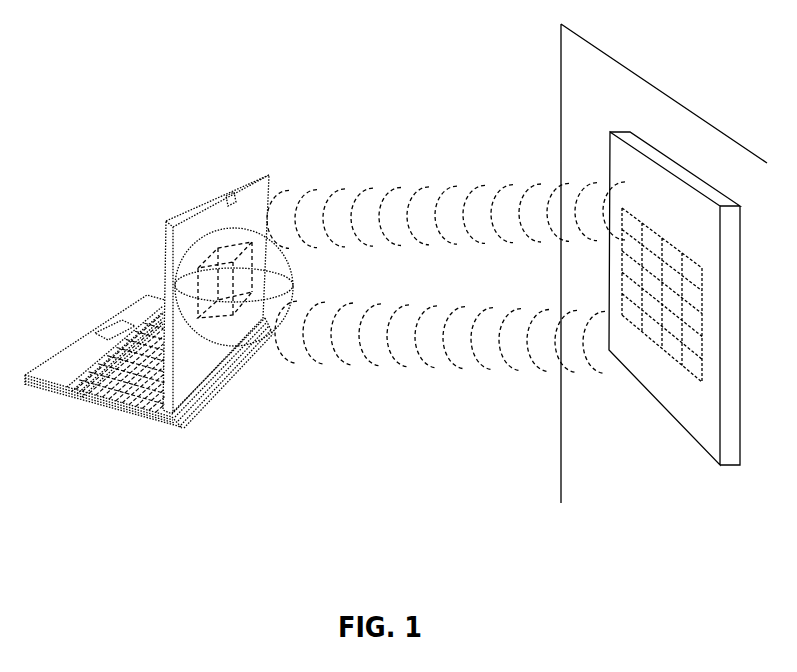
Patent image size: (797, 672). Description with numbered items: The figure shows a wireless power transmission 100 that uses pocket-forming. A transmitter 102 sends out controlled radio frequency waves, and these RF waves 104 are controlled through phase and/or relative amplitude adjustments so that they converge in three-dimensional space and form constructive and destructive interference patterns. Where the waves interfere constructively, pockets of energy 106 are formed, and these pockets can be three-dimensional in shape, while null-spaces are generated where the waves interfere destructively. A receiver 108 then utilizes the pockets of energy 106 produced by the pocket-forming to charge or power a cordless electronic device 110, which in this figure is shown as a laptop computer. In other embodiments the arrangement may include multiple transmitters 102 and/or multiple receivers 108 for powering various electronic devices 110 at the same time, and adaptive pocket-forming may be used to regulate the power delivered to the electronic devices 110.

The wireless power transmission 100 is at (128, 108).
The transmitter 102 is at (622, 171).
The RF waves 104 is at (410, 208).
The pockets of energy 106 is at (220, 223).
The receiver 108 is at (209, 313).
The cordless electronic device 110 is at (80, 360).